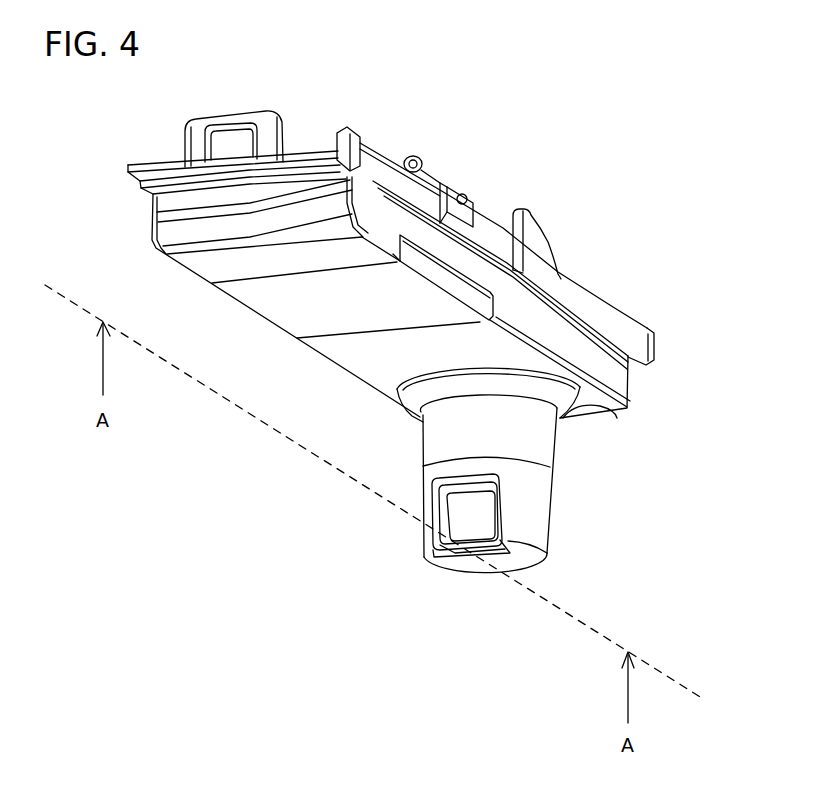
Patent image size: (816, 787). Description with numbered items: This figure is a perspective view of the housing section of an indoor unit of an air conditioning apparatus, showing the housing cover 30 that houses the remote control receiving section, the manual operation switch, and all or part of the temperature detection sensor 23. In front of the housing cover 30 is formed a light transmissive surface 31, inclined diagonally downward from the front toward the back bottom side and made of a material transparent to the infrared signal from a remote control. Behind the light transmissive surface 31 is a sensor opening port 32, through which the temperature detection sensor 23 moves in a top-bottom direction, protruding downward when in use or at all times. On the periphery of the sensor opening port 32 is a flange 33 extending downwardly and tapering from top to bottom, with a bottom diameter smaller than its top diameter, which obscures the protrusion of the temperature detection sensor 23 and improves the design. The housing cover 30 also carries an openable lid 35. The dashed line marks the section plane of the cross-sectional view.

The cylindrical portion 23 is at (538, 513).
The holder body 30 is at (424, 298).
The end wall 31 is at (173, 232).
The projection 32 is at (560, 402).
The annular flange 33 is at (560, 410).
The bottom plate 35 is at (290, 305).